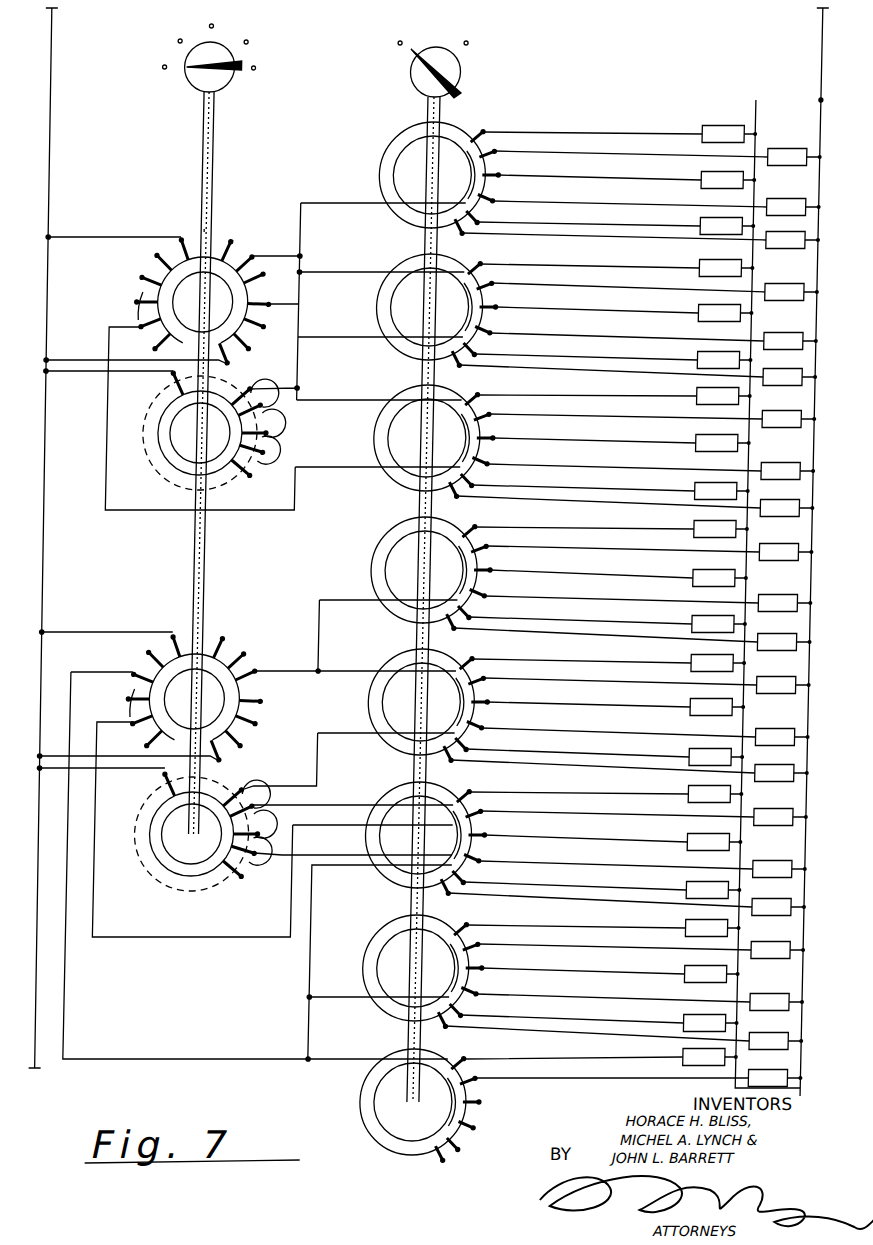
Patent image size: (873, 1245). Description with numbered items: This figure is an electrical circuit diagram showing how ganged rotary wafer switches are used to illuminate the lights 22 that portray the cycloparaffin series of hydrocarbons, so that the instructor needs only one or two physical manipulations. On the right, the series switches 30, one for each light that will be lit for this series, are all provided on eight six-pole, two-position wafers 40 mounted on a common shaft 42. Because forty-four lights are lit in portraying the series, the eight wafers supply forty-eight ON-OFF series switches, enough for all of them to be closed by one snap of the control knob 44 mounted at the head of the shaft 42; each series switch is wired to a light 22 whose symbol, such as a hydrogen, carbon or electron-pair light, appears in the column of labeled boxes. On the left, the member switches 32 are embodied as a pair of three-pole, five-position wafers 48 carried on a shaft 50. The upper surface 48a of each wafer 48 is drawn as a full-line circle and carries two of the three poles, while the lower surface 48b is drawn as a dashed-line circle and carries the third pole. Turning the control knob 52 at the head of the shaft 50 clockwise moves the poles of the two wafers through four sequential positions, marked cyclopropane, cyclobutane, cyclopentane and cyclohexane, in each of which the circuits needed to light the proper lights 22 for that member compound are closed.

The light 22 is at (727, 118).
The series switch 30 is at (470, 122).
The member switch 32 is at (174, 226).
The six pole, two position wafer 40 is at (385, 166).
The shaft 42 is at (428, 244).
The control knob 44 is at (415, 86).
The three pole, five position wafer 48 is at (206, 558).
The upper surface of wafer 48a is at (231, 265).
The lower surface of wafer 48b is at (176, 481).
The shaft 50 is at (217, 150).
The control knob 52 is at (191, 83).